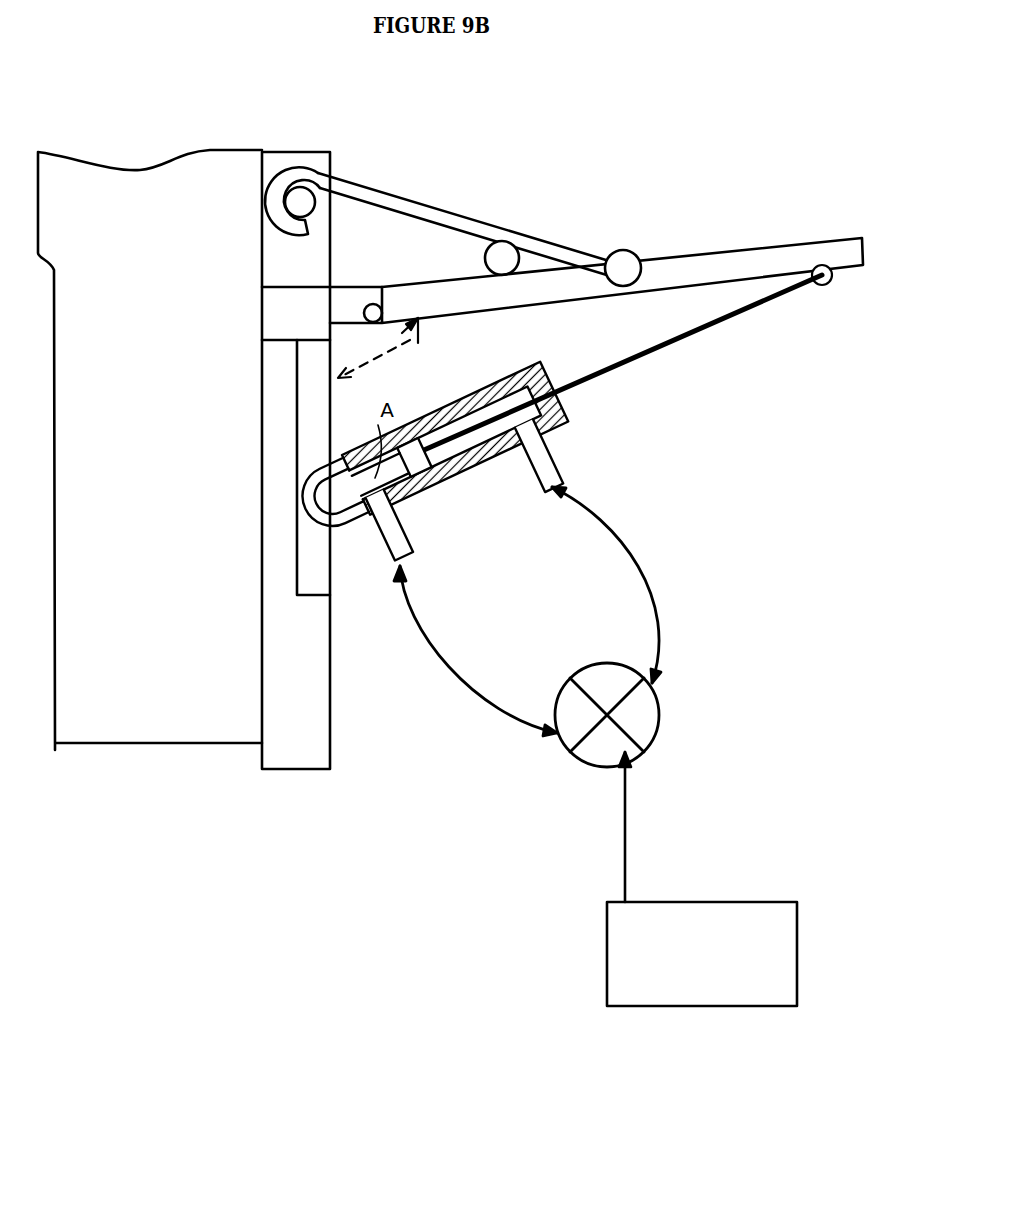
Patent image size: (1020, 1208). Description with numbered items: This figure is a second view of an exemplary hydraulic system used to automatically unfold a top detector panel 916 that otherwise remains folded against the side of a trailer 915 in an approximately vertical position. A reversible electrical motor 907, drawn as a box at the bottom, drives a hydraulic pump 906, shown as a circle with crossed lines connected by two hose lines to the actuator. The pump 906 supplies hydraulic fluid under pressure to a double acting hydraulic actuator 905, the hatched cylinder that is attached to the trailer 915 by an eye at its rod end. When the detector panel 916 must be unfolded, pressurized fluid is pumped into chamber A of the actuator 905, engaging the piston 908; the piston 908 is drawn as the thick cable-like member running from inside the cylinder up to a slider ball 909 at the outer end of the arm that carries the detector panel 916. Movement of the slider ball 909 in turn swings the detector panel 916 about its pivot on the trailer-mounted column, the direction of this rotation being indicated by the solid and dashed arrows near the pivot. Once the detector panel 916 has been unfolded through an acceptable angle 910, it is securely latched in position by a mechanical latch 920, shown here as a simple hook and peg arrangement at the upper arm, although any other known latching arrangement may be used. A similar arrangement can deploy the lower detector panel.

The double acting hydraulic actuator 905 is at (473, 470).
The hydraulic pump 906 is at (487, 703).
The reversible electrical motor 907 is at (625, 945).
The piston 908 is at (677, 340).
The slider ball 909 is at (828, 268).
The acceptable angle 910 is at (383, 343).
The trailer 915 is at (160, 723).
The detector panel 916 is at (830, 238).
The mechanical latch 920 is at (418, 205).